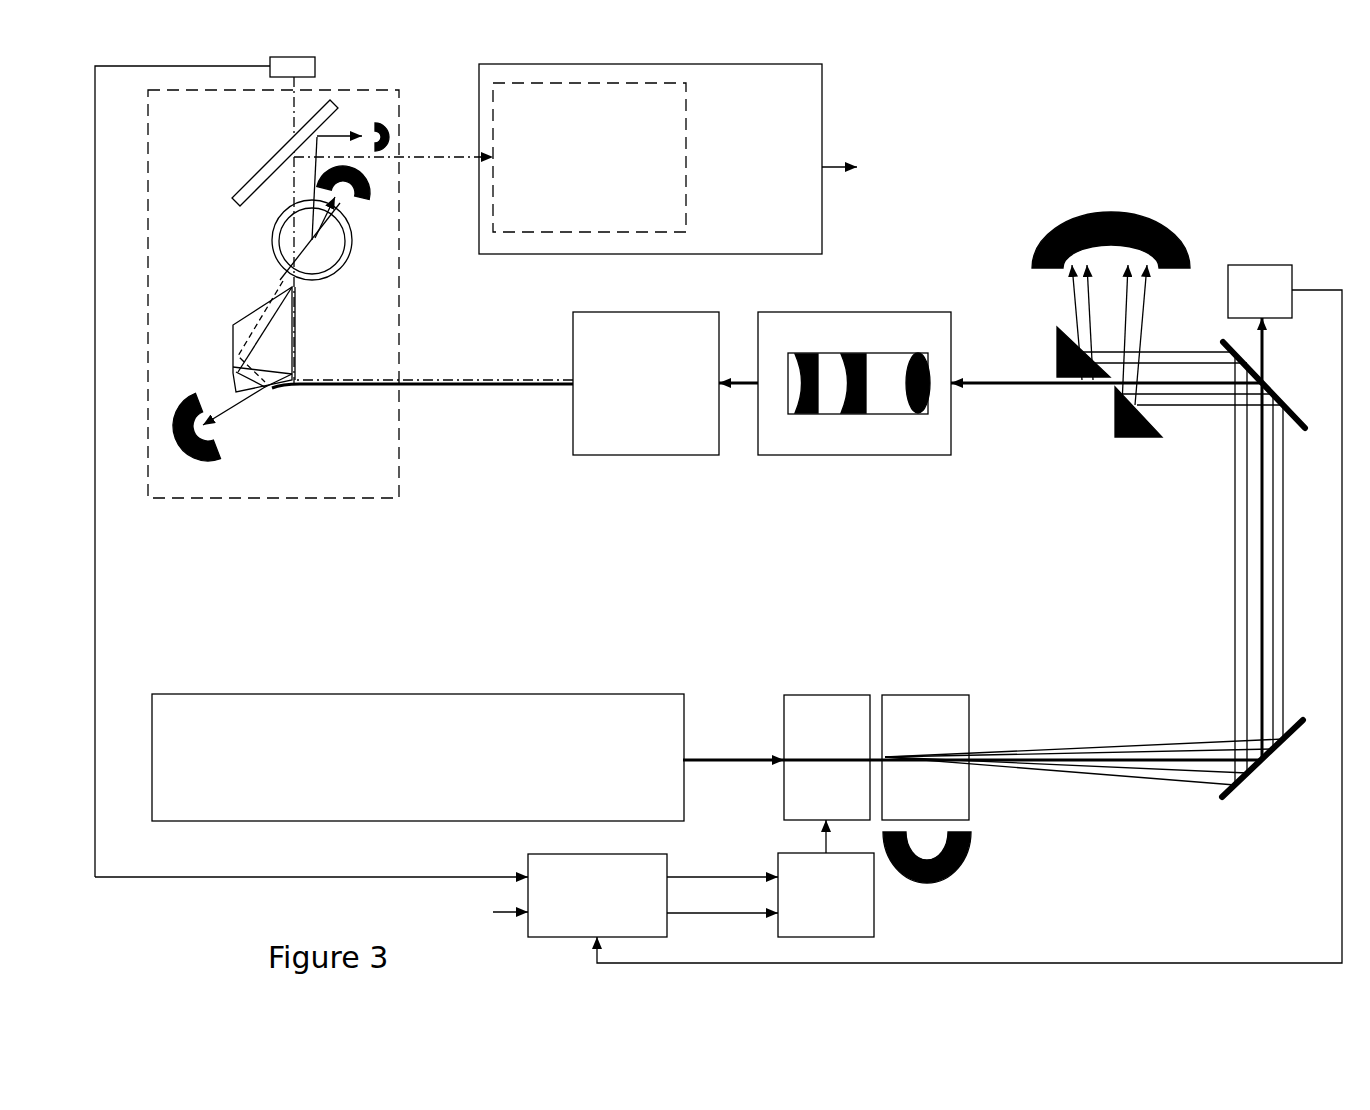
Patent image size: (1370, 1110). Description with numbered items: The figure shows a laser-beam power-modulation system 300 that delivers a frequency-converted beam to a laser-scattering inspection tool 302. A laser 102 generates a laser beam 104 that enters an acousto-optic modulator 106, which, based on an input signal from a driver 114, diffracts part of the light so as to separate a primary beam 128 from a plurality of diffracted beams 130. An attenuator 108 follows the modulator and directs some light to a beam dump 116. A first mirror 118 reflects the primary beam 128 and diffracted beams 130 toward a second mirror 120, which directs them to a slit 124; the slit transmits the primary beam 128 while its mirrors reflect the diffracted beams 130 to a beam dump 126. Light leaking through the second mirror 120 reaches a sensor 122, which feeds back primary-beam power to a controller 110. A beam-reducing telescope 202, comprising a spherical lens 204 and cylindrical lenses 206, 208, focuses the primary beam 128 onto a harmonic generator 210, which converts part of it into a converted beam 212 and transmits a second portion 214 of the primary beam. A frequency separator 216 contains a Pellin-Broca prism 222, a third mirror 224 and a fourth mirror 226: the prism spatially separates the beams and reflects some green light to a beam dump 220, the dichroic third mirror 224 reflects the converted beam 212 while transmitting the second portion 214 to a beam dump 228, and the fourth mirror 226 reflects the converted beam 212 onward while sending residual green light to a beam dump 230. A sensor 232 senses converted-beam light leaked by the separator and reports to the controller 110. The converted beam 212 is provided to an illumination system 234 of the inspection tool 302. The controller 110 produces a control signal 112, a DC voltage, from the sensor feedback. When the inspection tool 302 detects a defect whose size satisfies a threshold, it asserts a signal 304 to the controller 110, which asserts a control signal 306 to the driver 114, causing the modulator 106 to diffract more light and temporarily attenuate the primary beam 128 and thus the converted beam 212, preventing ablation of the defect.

The laser 102 is at (437, 767).
The laser beam 104 is at (700, 758).
The acousto-optic modulator 106 is at (812, 781).
The attenuator 108 is at (910, 725).
The controller 110 is at (582, 919).
The control signal 112 is at (683, 875).
The driver 114 is at (811, 919).
The beam dump 116 is at (972, 850).
The first mirror 118 is at (1234, 789).
The second mirror 120 is at (1300, 413).
The sensor 122 is at (1245, 302).
The slit 124 is at (1113, 420).
The beam dump 126 is at (1178, 228).
The primary beam 128 is at (998, 386).
The diffracted beams 130 is at (1082, 292).
The beam-reducing telescope 202 is at (778, 456).
The spherical lens 204 is at (918, 353).
The cylindrical lens 206 is at (853, 354).
The cylindrical lens 208 is at (807, 354).
The harmonic generator 210 is at (631, 418).
The converted beam 212 is at (414, 157).
The second portion of the primary beam 214 is at (438, 386).
The frequency separator 216 is at (360, 488).
The beam dump 220 is at (182, 455).
The Pellin-Broca prism 222 is at (300, 342).
The third mirror 224 is at (272, 246).
The fourth mirror 226 is at (260, 166).
The beam dump 228 is at (374, 198).
The beam dump 230 is at (376, 120).
The sensor 232 is at (316, 67).
The illumination system 234 is at (574, 180).
The laser-beam power-modulation system 300 is at (1068, 108).
The inspection tool 302 is at (782, 148).
The signal 304 is at (677, 540).
The control signal 306 is at (683, 915).